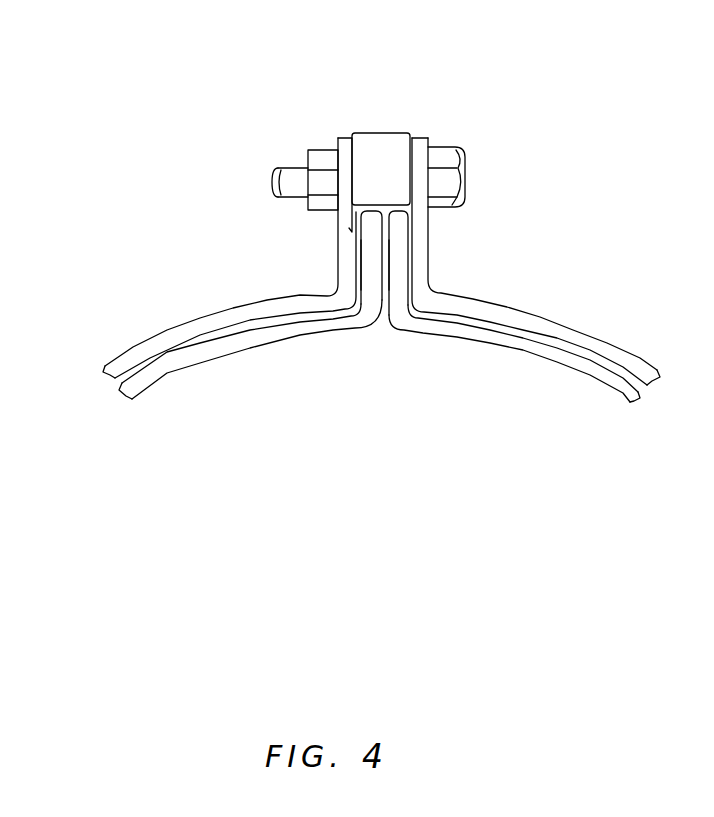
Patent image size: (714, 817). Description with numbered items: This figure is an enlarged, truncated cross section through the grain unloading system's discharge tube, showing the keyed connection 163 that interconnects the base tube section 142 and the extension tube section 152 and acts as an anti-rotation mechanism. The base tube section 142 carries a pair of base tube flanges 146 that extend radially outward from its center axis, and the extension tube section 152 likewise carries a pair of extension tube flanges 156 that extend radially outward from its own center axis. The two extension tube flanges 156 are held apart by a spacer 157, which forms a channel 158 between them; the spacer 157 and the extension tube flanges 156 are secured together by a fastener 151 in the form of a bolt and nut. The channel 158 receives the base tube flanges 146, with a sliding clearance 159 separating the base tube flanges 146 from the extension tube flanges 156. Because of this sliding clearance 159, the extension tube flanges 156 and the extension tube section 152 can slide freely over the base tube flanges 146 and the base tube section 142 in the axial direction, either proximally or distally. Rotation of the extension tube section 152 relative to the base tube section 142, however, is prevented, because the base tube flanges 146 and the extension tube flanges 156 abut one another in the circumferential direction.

The base tube section 142 is at (602, 373).
The extension tube section 152 is at (565, 330).
The base tube flanges 146 is at (378, 256).
The extension tube flanges 156 is at (348, 230).
The sliding clearance 159 is at (357, 233).
The keyed connection 163 is at (446, 108).
The spacer 157 is at (371, 158).
The channel 158 is at (403, 168).
The fastener 151 is at (509, 165).